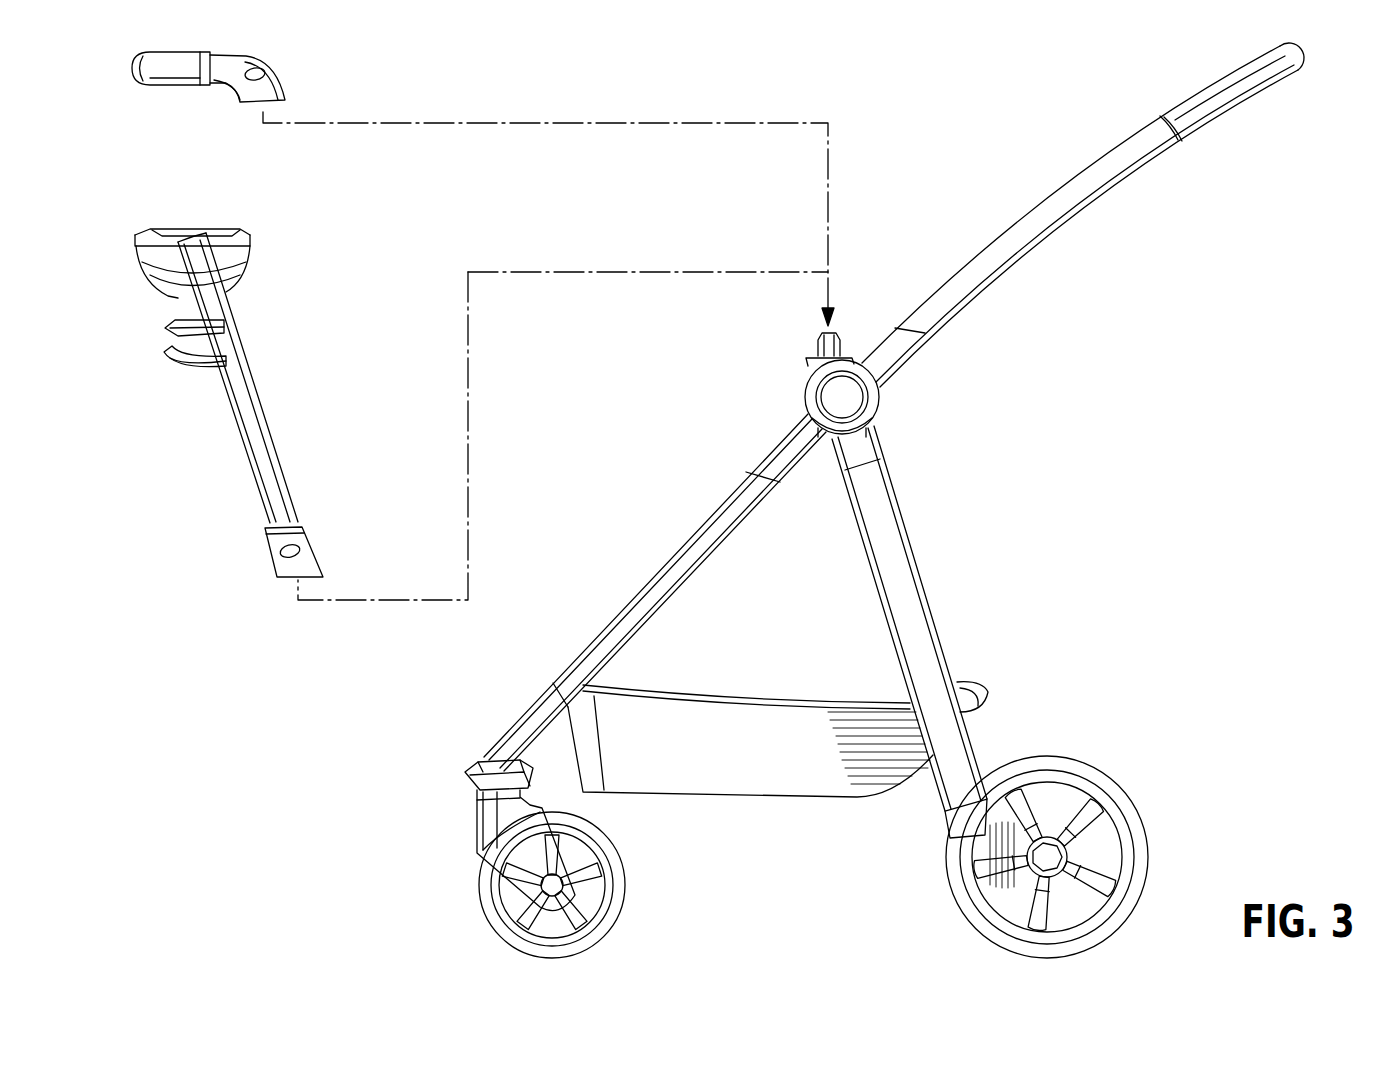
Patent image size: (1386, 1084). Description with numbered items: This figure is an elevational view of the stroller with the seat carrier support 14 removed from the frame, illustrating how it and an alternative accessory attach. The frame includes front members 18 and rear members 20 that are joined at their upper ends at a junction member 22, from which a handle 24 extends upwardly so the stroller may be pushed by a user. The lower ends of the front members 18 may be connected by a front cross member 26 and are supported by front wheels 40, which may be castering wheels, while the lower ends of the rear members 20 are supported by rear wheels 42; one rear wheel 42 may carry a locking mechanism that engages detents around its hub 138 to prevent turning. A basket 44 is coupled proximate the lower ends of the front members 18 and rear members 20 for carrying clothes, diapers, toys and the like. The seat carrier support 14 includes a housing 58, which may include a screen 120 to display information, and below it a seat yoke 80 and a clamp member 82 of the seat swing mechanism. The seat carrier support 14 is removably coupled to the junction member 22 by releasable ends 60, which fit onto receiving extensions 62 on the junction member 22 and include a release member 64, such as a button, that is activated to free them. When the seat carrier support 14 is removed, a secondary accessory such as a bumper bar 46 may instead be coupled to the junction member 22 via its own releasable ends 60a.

The seat carrier support 14 is at (290, 352).
The front members 18 is at (636, 580).
The rear members 20 is at (268, 415).
The junction member 22 is at (855, 406).
The handle 24 is at (1090, 156).
The front cross member 26 is at (476, 762).
The front wheels 40 is at (488, 886).
The rear wheels 42 is at (1050, 760).
The basket 44 is at (750, 787).
The bumper bar 46 is at (183, 93).
The housing 58 is at (248, 264).
The releasable ends 60 is at (266, 562).
The releasable ends 60a is at (283, 93).
The receiving extensions 62 is at (814, 343).
The release member 64 is at (298, 549).
The seat yoke 80 is at (190, 368).
The clamp member 82 is at (165, 326).
The screen 120 is at (192, 229).
The hub 138 is at (1060, 880).